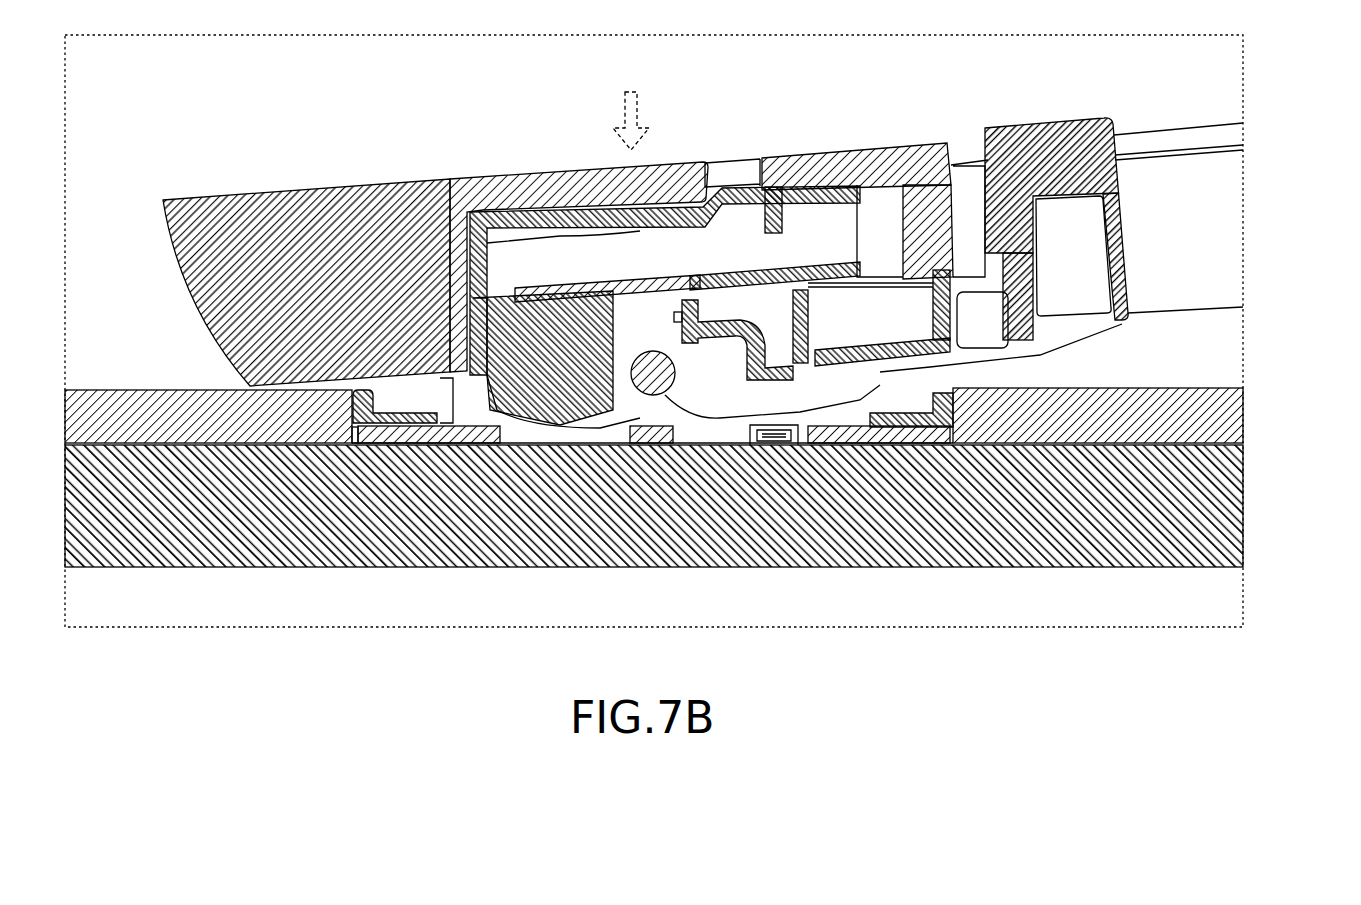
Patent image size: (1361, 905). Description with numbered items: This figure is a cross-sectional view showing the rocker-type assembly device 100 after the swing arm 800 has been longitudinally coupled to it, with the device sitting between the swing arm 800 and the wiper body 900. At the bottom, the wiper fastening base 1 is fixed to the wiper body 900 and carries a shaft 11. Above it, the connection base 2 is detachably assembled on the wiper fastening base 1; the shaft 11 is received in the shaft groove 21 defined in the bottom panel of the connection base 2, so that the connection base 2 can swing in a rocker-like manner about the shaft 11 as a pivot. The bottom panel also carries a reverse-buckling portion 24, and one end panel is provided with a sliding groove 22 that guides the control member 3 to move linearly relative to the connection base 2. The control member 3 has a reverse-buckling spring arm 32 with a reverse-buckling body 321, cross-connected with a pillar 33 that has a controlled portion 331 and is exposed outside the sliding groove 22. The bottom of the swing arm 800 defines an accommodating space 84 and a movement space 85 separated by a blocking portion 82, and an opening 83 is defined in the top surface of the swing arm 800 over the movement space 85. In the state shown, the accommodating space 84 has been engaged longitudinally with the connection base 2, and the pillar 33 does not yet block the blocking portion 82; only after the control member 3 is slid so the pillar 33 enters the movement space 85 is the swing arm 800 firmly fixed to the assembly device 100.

The wiper fastening base 1 is at (554, 445).
The shaft 11 is at (655, 385).
The connection base 2 is at (470, 210).
The shaft groove 21 is at (647, 345).
The sliding groove 22 is at (718, 340).
The reverse-buckling portion 24 is at (808, 385).
The control member 3 is at (1150, 205).
The reverse-buckling spring arm 32 is at (913, 433).
The reverse-buckling body 321 is at (848, 445).
The pillar 33 is at (1118, 240).
The controlled portion 331 is at (1050, 125).
The blocking portion 82 is at (922, 215).
The opening 83 is at (978, 150).
The accommodating space 84 is at (878, 203).
The movement space 85 is at (1240, 210).
The rocker-type assembly device 100 is at (1145, 353).
The swing arm 800 is at (273, 182).
The wiper body 900 is at (345, 555).